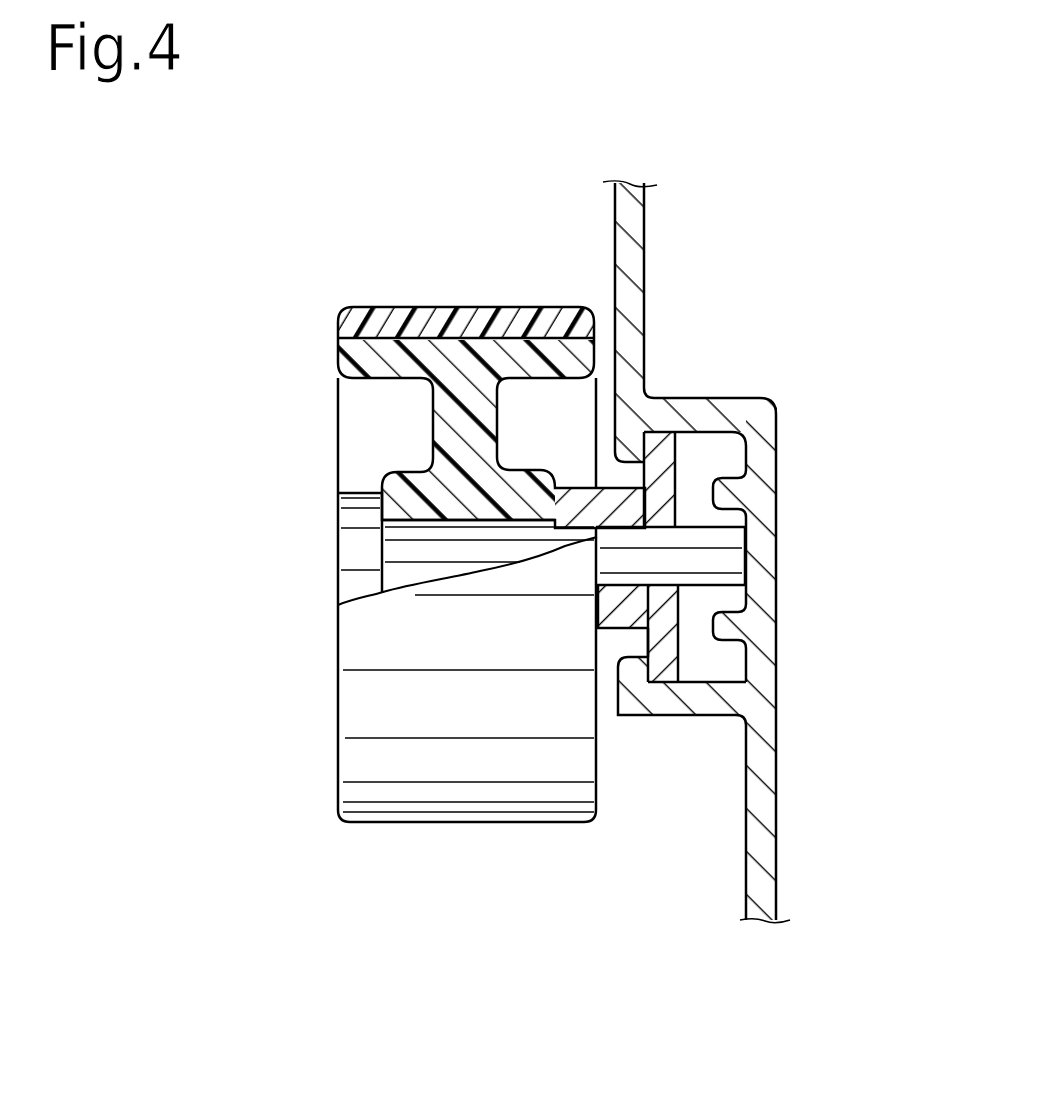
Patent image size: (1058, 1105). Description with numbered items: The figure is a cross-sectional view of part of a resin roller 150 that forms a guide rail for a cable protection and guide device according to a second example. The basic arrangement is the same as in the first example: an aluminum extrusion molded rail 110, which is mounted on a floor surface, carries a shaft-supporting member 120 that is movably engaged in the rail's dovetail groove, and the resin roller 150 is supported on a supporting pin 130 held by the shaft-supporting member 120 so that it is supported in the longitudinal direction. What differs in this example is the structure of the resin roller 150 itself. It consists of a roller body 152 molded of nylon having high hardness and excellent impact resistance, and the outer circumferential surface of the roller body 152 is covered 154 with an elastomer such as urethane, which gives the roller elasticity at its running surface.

The aluminum extrusion molded rail 110 is at (765, 852).
The shaft-supporting member 120 is at (665, 462).
The supporting pin 130 is at (353, 550).
The resin roller 150 is at (445, 903).
The roller body 152 is at (411, 350).
The elastomer covering 154 is at (448, 315).